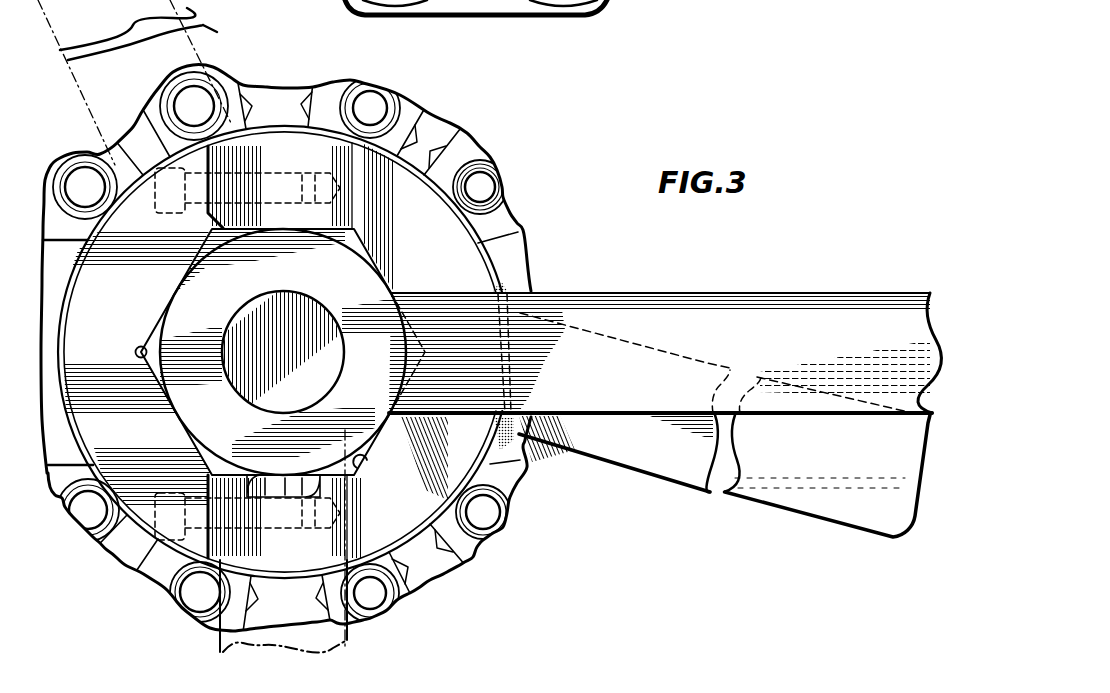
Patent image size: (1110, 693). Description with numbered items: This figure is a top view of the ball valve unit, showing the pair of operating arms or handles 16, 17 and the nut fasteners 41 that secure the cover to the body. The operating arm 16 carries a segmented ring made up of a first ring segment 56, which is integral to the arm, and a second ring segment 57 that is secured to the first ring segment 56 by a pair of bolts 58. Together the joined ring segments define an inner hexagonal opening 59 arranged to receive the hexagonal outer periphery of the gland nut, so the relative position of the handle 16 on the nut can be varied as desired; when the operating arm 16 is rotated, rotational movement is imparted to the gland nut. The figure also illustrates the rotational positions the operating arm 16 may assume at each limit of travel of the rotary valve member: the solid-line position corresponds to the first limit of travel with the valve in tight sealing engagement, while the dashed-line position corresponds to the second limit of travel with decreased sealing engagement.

The operating arm 16 is at (200, 7).
The operating arm 17 is at (693, 293).
The nut fasteners 41 is at (626, 0).
The first ring segment 56 is at (467, 267).
The second ring segment 57 is at (117, 228).
The bolts 58 is at (186, 172).
The inner hexagonal opening 59 is at (362, 460).